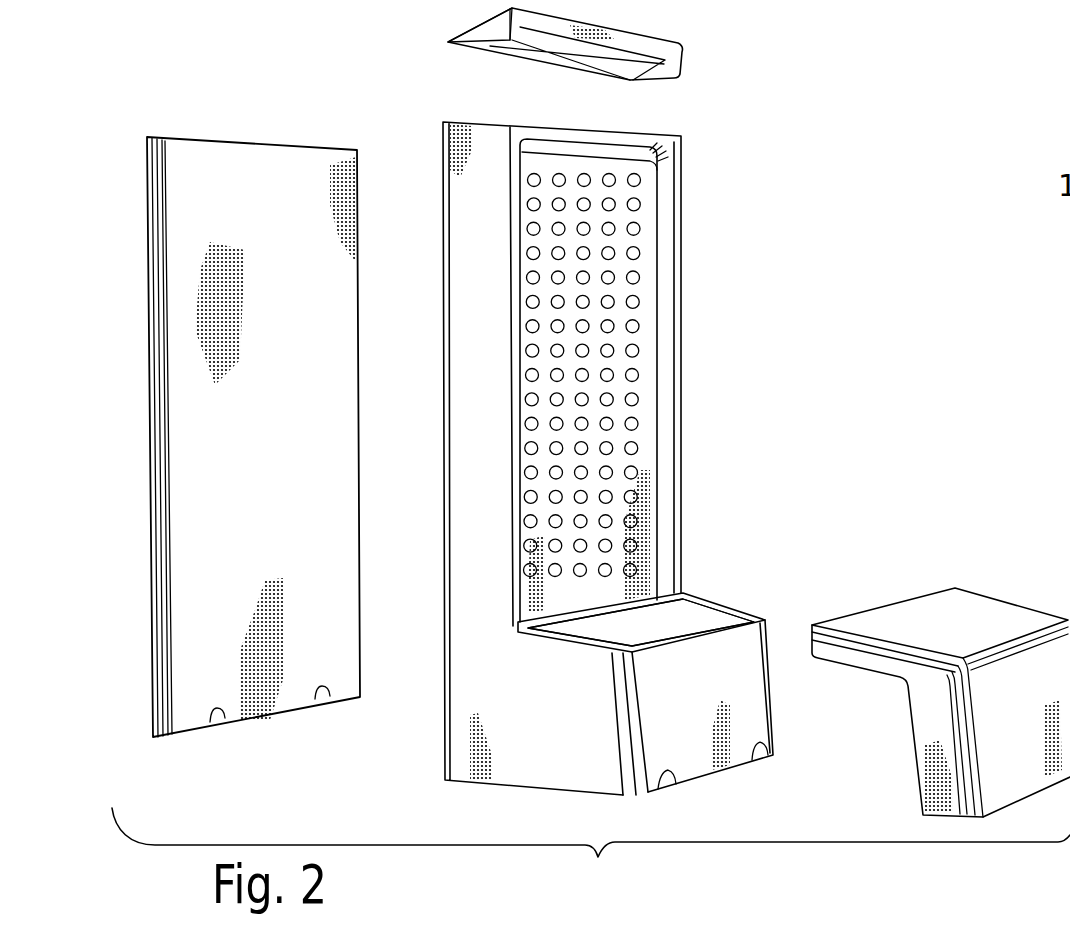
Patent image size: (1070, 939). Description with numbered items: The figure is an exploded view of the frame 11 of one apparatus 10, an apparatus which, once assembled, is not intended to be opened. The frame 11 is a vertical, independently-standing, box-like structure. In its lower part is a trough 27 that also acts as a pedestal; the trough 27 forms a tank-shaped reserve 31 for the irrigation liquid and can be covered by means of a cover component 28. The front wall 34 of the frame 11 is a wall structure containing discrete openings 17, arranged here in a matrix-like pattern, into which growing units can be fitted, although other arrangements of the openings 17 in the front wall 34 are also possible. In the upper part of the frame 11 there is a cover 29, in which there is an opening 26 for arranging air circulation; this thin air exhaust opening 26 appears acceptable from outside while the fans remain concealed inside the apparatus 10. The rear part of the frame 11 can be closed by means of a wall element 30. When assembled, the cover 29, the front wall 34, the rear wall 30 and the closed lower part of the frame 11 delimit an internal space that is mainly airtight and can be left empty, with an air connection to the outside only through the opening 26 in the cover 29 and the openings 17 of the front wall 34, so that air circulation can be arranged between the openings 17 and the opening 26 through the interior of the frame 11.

The apparatus 10 is at (598, 855).
The frame 11 is at (687, 322).
The openings 17 is at (640, 180).
The opening 26 is at (683, 62).
The trough 27 is at (743, 663).
The cover component 28 is at (950, 622).
The cover 29 is at (487, 63).
The wall element 30 is at (253, 172).
The reserve 31 is at (620, 633).
The front wall 34 is at (630, 240).